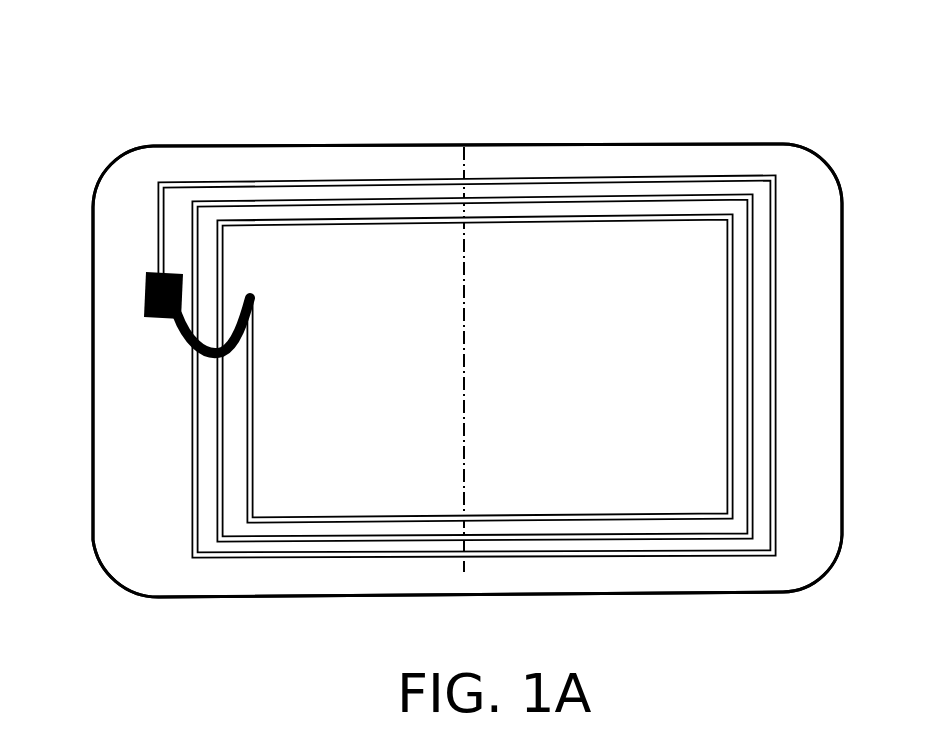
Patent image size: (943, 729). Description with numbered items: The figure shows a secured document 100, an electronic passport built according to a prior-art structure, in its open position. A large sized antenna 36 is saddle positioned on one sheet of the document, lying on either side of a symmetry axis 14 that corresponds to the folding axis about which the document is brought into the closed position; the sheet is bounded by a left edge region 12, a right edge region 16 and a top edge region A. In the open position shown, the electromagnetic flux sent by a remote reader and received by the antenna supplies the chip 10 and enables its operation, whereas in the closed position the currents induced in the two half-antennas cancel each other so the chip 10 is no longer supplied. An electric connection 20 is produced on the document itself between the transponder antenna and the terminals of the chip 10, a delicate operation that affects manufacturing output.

The secured document 100 is at (758, 86).
The top edge region A is at (657, 142).
The chip 10 is at (146, 297).
The electric connection 20 is at (185, 342).
The antenna coil 36 is at (216, 394).
The left side edge of substrate 12 is at (110, 463).
The symmetry axis 14 is at (465, 585).
The right side edge of substrate 16 is at (822, 464).